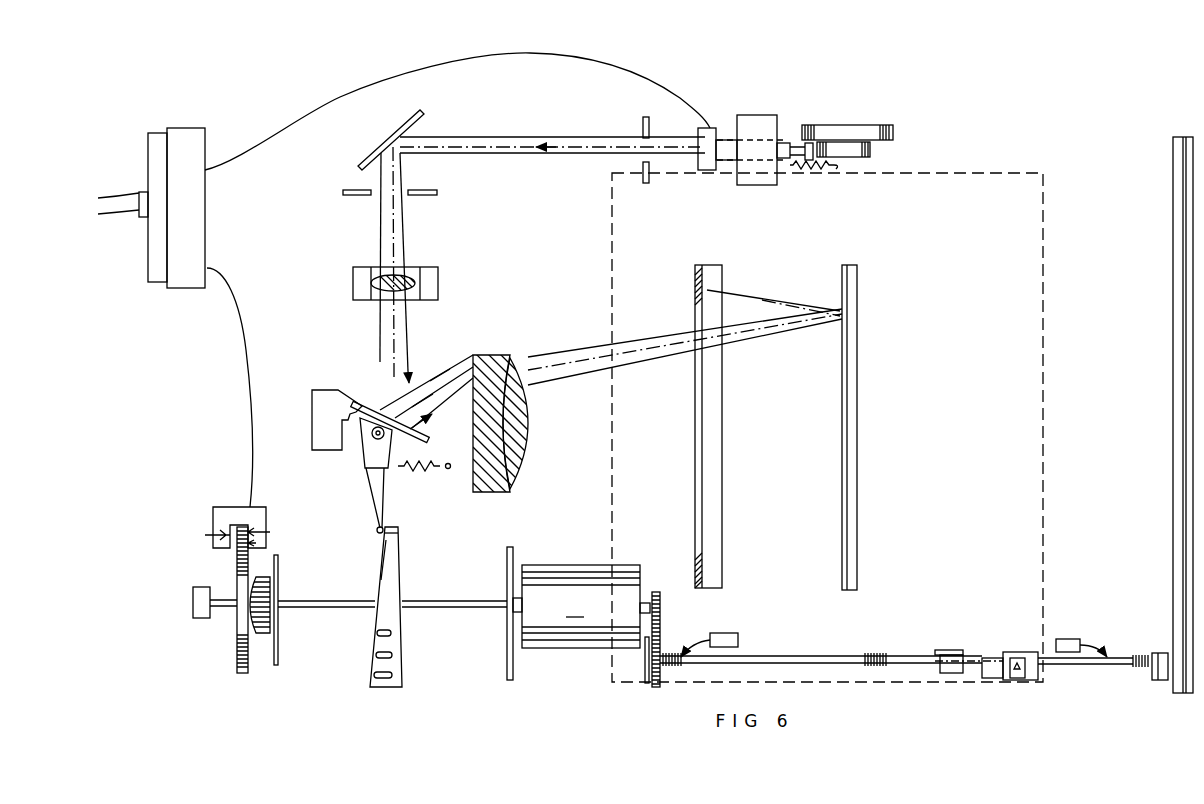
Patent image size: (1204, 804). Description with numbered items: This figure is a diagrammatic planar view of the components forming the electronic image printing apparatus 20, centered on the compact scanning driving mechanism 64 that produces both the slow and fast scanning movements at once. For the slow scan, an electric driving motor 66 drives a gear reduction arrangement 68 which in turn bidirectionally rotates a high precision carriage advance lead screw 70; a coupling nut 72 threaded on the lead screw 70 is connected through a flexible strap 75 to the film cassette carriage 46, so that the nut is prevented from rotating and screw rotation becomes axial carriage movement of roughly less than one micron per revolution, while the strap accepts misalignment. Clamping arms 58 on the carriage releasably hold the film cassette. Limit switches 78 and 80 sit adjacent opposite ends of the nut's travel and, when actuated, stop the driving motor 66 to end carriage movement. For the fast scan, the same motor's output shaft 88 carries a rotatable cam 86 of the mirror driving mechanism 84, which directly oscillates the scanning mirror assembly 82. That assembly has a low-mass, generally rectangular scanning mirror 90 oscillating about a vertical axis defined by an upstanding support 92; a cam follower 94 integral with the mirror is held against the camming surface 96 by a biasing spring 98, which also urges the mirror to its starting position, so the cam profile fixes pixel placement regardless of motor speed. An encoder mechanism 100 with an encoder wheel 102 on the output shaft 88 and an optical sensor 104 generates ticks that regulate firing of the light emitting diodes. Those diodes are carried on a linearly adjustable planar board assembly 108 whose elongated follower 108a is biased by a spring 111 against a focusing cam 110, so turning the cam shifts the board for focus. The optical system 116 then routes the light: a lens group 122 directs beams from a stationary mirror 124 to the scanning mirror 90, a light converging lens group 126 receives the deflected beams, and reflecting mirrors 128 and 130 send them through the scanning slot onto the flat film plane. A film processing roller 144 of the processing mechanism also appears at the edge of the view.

The electronic image printing apparatus 20 is at (1028, 160).
The film cassette carriage 46 is at (955, 197).
The clamping arms 58 is at (948, 651).
The scanning driving mechanism 64 is at (386, 606).
The electric driving motor 66 is at (555, 565).
The gear reduction arrangement 68 is at (640, 690).
The carriage advance lead screw 70 is at (832, 656).
The coupling nut 72 is at (1020, 680).
The flexible strap 75 is at (990, 678).
The limit switch 78 is at (740, 640).
The limit switch 80 is at (1066, 639).
The scanning mirror assembly 82 is at (353, 434).
The mirror driving mechanism 84 is at (355, 640).
The rotatable cam 86 is at (396, 575).
The output shaft 88 is at (468, 601).
The scanning mirror 90 is at (367, 404).
The upstanding support 92 is at (306, 395).
The cam follower 94 is at (376, 530).
The camming surface 96 is at (384, 567).
The biasing spring 98 is at (416, 478).
The encoder mechanism 100 is at (197, 578).
The encoder wheel 102 is at (237, 660).
The optical sensor 104 is at (233, 508).
The planar board assembly 108 is at (712, 172).
The elongated follower 108a is at (727, 148).
The focusing cam 110 is at (856, 127).
The spring 111 is at (818, 171).
The optical system 116 is at (375, 239).
The lens group 122 is at (441, 274).
The stationary mirror 124 is at (422, 123).
The light converging lens group 126 is at (488, 352).
The reflecting mirror 128 is at (868, 411).
The reflecting mirror 130 is at (700, 267).
The film processing roller 144 is at (1173, 386).